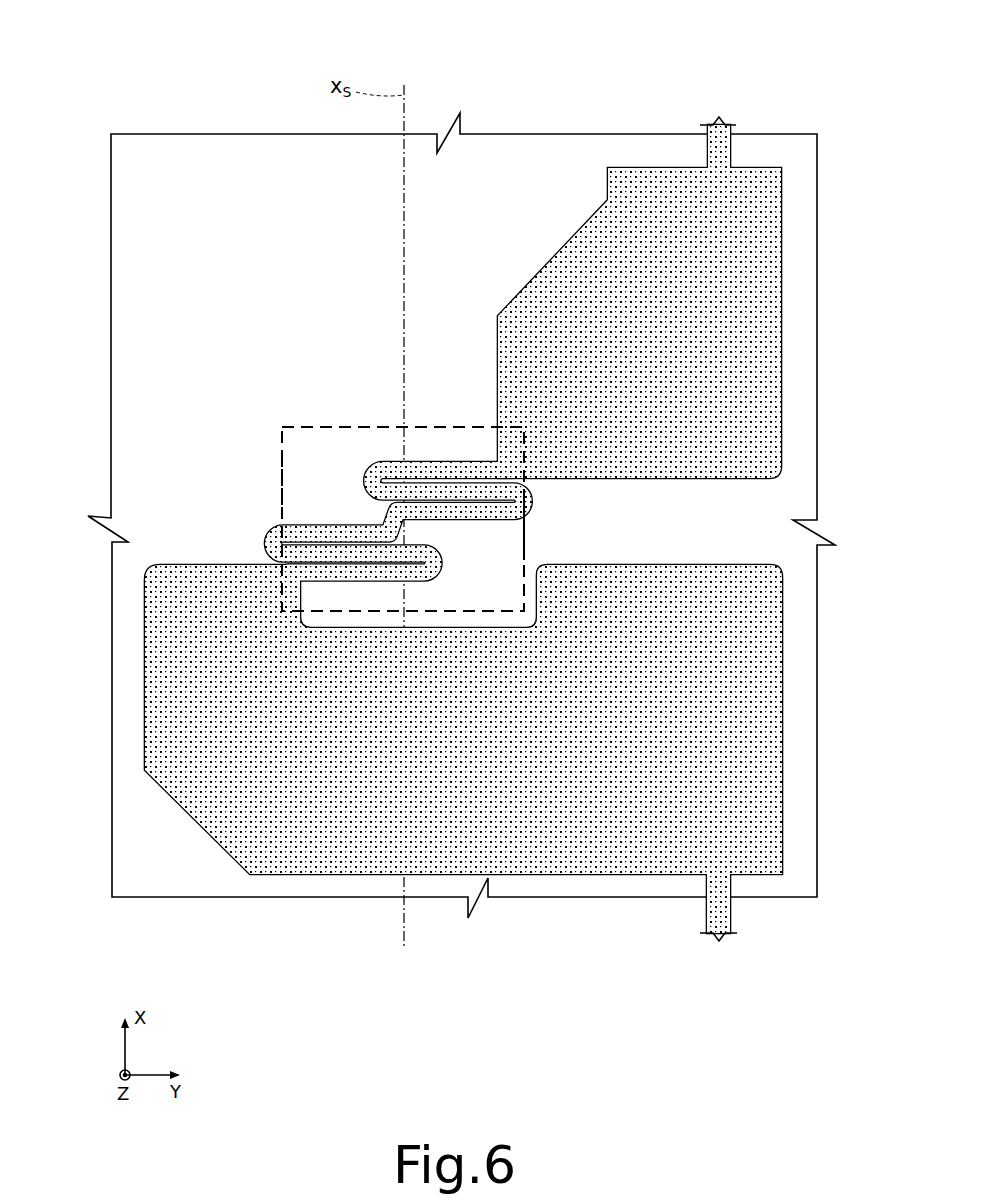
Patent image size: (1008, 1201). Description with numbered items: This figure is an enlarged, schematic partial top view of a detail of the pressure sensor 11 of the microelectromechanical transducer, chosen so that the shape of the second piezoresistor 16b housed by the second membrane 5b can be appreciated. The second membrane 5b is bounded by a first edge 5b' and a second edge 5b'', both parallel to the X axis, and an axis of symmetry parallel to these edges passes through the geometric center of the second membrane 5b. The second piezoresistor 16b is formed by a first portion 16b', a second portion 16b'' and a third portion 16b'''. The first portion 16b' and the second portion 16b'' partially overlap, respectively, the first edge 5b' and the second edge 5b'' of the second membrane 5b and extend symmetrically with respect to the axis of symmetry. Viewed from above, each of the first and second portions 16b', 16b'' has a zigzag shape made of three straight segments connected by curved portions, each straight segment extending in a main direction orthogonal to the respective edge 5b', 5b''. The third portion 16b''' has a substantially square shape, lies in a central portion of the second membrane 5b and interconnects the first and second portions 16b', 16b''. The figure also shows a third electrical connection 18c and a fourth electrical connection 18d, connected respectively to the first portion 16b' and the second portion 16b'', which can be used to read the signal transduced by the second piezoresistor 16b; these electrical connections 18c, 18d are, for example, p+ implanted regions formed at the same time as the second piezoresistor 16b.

The pressure sensor 11 is at (121, 76).
The second membrane 5b is at (385, 470).
The first edge of the second membrane 5b' is at (570, 530).
The second edge of the second membrane 5b'' is at (224, 460).
The second piezoresistor 16b is at (398, 469).
The first portion of the second piezoresistor 16b' is at (462, 410).
The second portion of the second piezoresistor 16b'' is at (166, 478).
The third portion of the second piezoresistor 16b''' is at (452, 557).
The third electrical connection 18c is at (773, 378).
The fourth electrical connection 18d is at (773, 651).